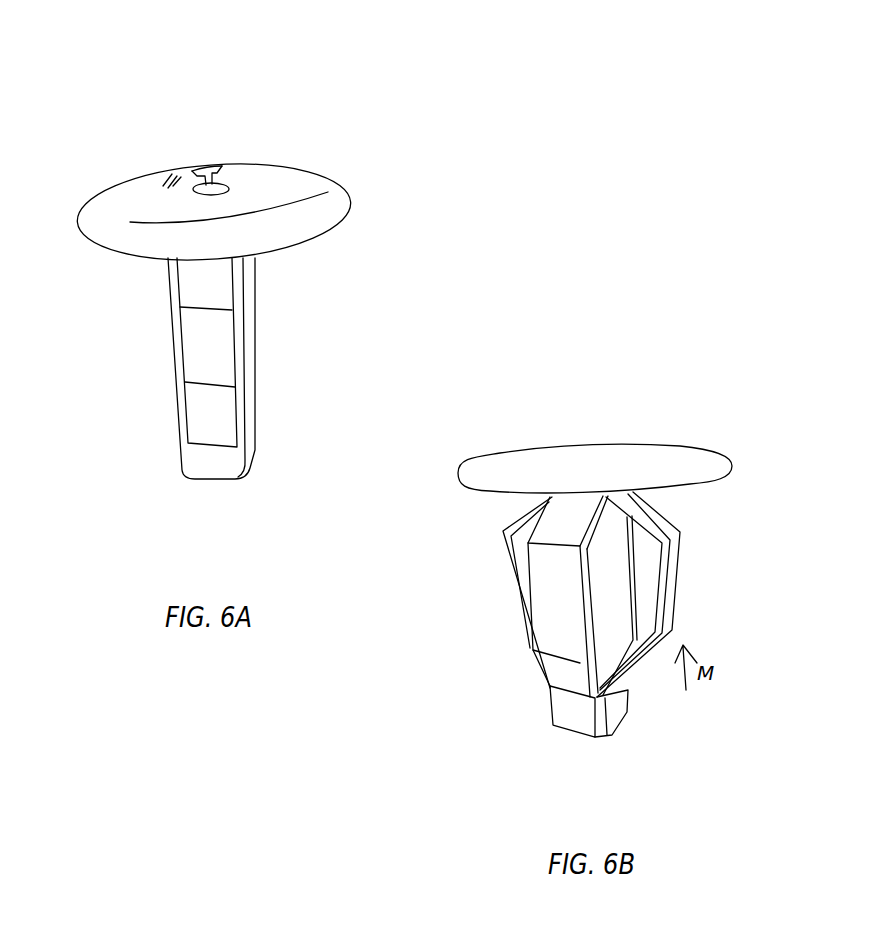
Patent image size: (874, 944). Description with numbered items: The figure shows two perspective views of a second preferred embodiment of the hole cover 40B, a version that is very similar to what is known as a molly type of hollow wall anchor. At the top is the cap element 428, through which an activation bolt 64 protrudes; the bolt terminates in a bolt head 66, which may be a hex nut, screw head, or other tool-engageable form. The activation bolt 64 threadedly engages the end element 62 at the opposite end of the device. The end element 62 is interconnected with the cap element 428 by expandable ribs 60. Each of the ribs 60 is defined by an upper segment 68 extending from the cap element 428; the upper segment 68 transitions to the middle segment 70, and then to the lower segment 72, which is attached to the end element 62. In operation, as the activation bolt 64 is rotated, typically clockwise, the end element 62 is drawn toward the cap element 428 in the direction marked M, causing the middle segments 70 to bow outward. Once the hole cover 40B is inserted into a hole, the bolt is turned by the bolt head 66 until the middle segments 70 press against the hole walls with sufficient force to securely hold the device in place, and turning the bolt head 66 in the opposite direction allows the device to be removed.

In FIG. 6B, the hole cover 40B is at (646, 172).
In FIG. 6A, the cap element 428 is at (292, 190).
In FIG. 6B, the cap element 428 is at (690, 465).
In FIG. 6A, the expandable ribs 60 is at (218, 410).
In FIG. 6B, the expandable ribs 60 is at (667, 590).
In FIG. 6A, the end element 62 is at (202, 458).
In FIG. 6B, the end element 62 is at (580, 717).
In FIG. 6A, the activation bolt 64 is at (210, 159).
In FIG. 6A, the bolt head 66 is at (185, 178).
In FIG. 6B, the upper segment 68 is at (553, 528).
In FIG. 6B, the middle segment 70 is at (552, 612).
In FIG. 6B, the lower segment 72 is at (549, 684).